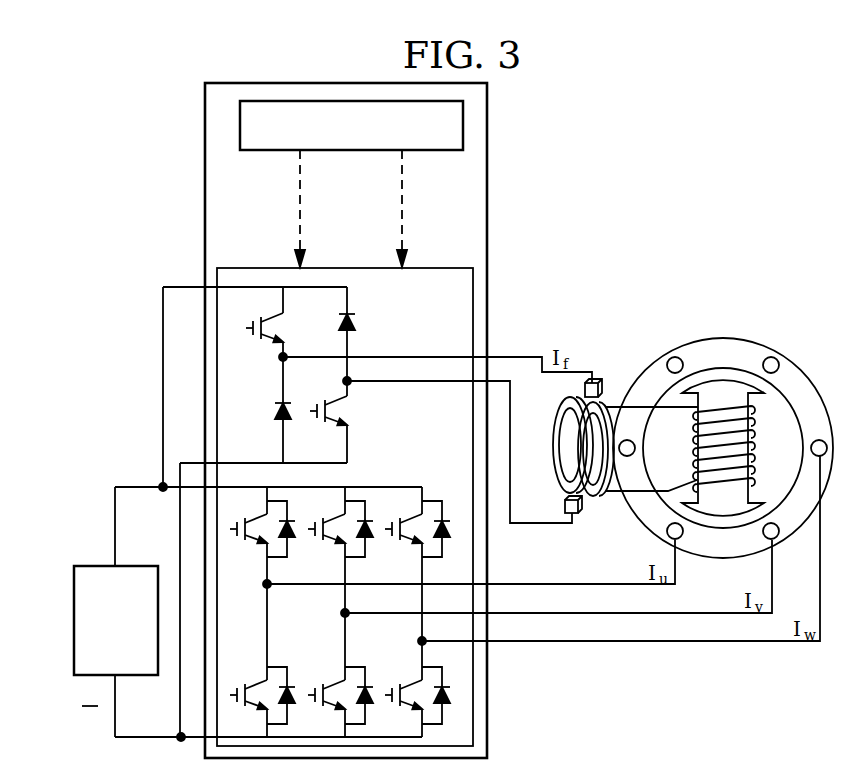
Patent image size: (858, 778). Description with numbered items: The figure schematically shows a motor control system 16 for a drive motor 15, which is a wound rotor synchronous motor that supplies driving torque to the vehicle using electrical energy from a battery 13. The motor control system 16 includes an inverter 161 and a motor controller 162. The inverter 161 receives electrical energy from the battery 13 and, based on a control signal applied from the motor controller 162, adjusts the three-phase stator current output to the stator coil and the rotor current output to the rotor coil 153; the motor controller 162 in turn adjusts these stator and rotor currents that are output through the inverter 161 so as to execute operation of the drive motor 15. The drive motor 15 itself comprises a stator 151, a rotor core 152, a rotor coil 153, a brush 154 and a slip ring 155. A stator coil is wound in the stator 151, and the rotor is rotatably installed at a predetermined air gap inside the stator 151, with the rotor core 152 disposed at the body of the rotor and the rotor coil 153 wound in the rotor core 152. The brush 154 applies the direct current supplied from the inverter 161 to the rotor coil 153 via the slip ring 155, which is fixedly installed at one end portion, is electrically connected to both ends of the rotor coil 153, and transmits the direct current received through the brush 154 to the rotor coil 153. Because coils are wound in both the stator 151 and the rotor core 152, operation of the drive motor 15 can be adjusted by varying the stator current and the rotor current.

The battery 13 is at (74, 622).
The drive motor 15 is at (723, 433).
The motor control system 16 is at (487, 100).
The stator 151 is at (697, 352).
The rotor core 152 is at (722, 388).
The rotor coil 153 is at (718, 490).
The brush 154 is at (594, 382).
The slip ring 155 is at (598, 426).
The inverter 161 is at (487, 697).
The motor controller 162 is at (463, 125).